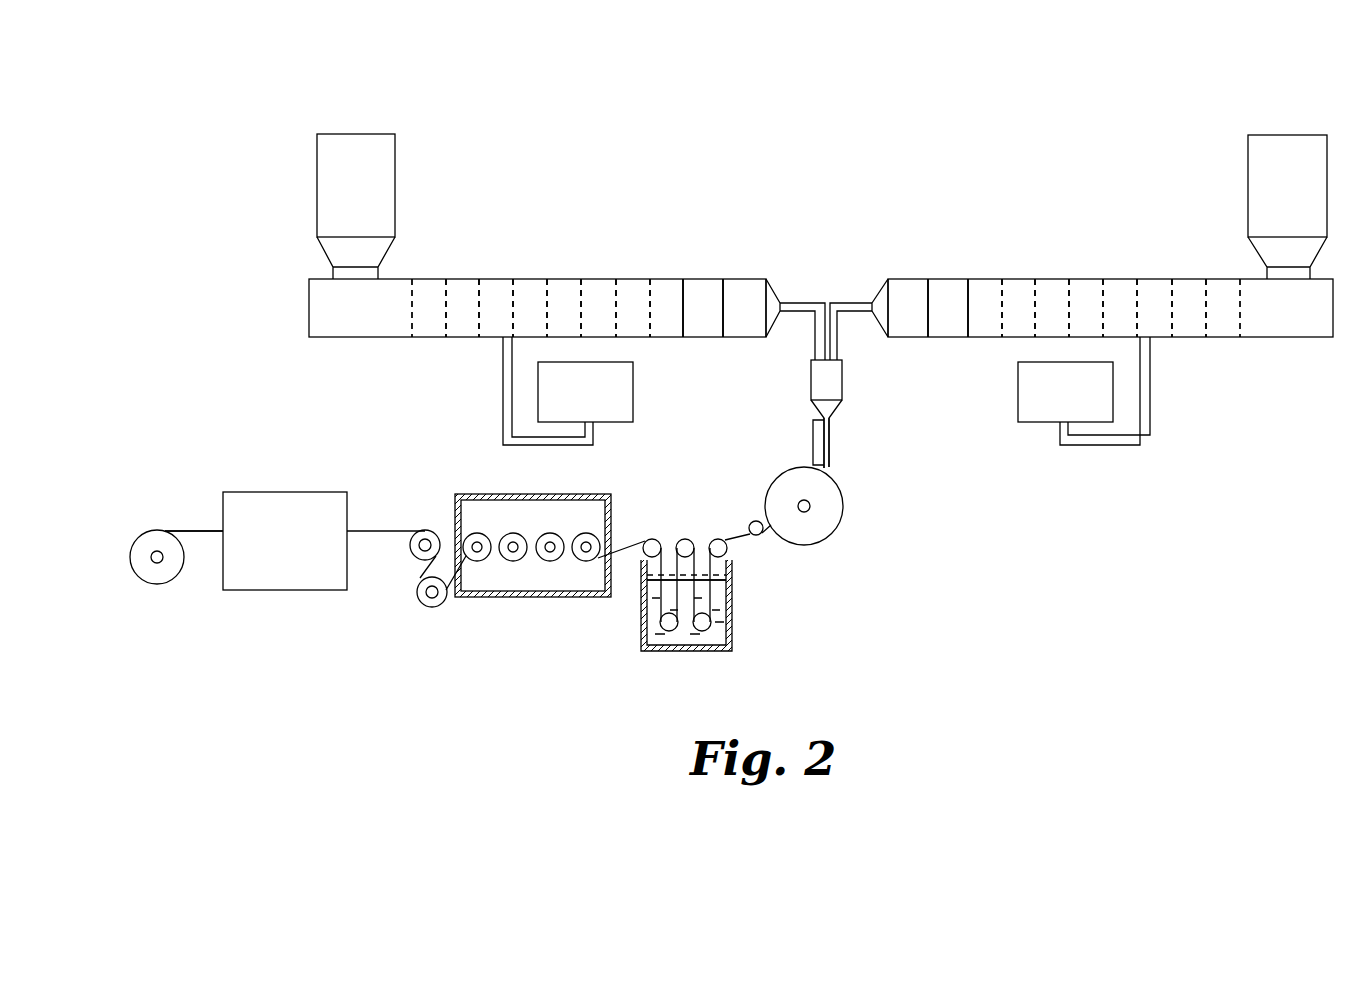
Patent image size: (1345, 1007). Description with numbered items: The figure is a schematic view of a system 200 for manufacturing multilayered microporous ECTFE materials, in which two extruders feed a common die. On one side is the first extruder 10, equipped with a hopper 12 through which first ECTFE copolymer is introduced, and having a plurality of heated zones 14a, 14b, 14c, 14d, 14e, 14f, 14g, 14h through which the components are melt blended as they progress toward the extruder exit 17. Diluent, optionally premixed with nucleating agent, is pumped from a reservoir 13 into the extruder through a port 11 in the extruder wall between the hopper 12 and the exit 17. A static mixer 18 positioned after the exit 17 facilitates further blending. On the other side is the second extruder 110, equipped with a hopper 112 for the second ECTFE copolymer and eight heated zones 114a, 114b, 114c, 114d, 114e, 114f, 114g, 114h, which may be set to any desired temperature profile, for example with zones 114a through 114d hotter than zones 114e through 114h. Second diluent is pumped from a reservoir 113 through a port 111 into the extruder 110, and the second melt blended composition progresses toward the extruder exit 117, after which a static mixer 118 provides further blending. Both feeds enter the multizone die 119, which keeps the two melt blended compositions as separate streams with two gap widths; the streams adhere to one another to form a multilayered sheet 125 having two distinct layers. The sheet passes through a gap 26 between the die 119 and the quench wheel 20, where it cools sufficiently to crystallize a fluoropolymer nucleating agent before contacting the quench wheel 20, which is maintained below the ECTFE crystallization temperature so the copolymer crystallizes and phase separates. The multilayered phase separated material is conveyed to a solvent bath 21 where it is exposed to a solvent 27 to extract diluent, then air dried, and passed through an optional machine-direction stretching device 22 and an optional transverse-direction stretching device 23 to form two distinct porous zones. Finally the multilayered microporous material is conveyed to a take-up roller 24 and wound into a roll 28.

The system 200 is at (646, 142).
The second extruder 110 is at (648, 345).
The hopper 112 is at (387, 155).
The heated zone 114a is at (430, 285).
The heated zone 114b is at (458, 287).
The heated zone 114c is at (498, 285).
The heated zone 114d is at (528, 287).
The heated zone 114e is at (564, 285).
The heated zone 114f is at (595, 287).
The heated zone 114g is at (632, 285).
The heated zone 114h is at (665, 287).
The extruder exit 117 is at (702, 285).
The static mixer 118 is at (745, 285).
The port 111 is at (505, 340).
The reservoir 113 is at (625, 405).
The first extruder 10 is at (1010, 340).
The hopper 12 is at (1255, 157).
The static mixer 18 is at (906, 287).
The extruder exit 17 is at (948, 287).
The heated zone 14a is at (1221, 287).
The heated zone 14b is at (1191, 287).
The heated zone 14c is at (1155, 287).
The heated zone 14d is at (1120, 287).
The heated zone 14e is at (1090, 287).
The heated zone 14f is at (1056, 287).
The heated zone 14g is at (1022, 287).
The heated zone 14h is at (986, 287).
The port 11 is at (1145, 338).
The reservoir 13 is at (1025, 403).
The multizone die 119 is at (833, 380).
The multilayered sheet 125 is at (830, 430).
The gap 26 is at (813, 446).
The quench wheel 20 is at (820, 532).
The solvent bath 21 is at (641, 636).
The solvent 27 is at (690, 640).
The machine-direction stretching device 22 is at (473, 494).
The transverse-direction stretching device 23 is at (280, 492).
The take-up roller 24 is at (163, 568).
The roll 28 is at (155, 530).